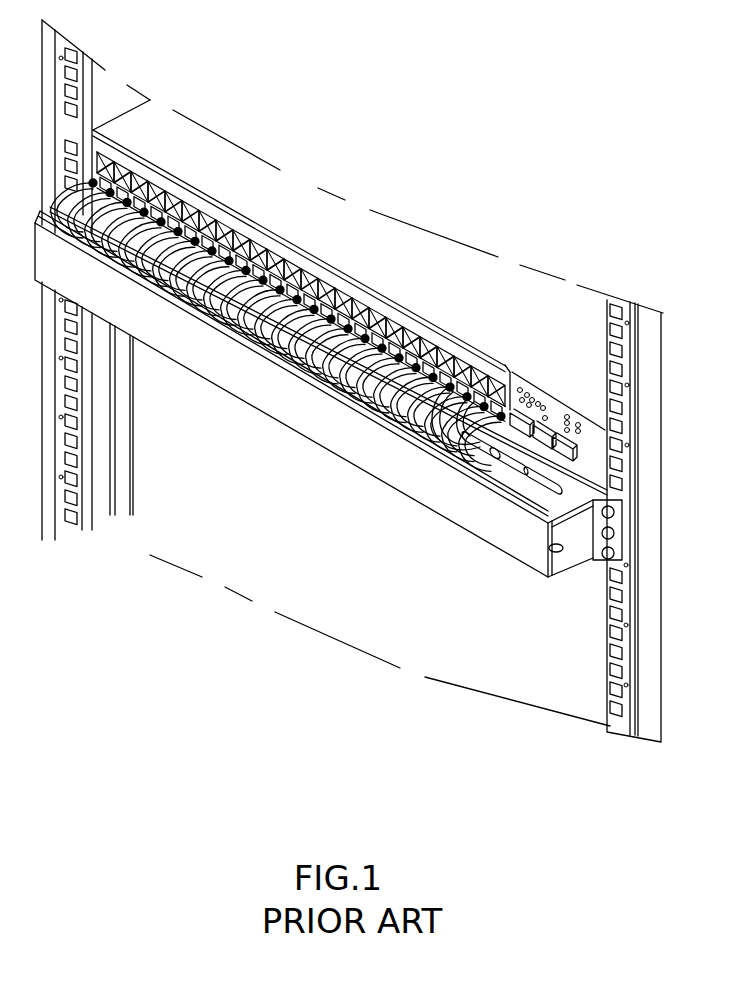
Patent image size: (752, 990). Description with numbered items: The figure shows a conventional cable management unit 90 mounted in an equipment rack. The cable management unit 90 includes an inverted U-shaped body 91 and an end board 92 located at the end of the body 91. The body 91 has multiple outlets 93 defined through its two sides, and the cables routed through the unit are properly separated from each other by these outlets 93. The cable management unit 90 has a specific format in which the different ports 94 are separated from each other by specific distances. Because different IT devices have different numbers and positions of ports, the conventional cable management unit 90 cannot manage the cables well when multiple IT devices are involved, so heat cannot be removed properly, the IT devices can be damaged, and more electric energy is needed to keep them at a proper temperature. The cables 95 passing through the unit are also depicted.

The cable management unit 90 is at (293, 473).
The inverted U-shaped body 91 is at (593, 542).
The end board 92 is at (502, 537).
The outlets 93 is at (487, 478).
The ports 94 is at (493, 364).
The cable hooks / cables 95 is at (470, 438).